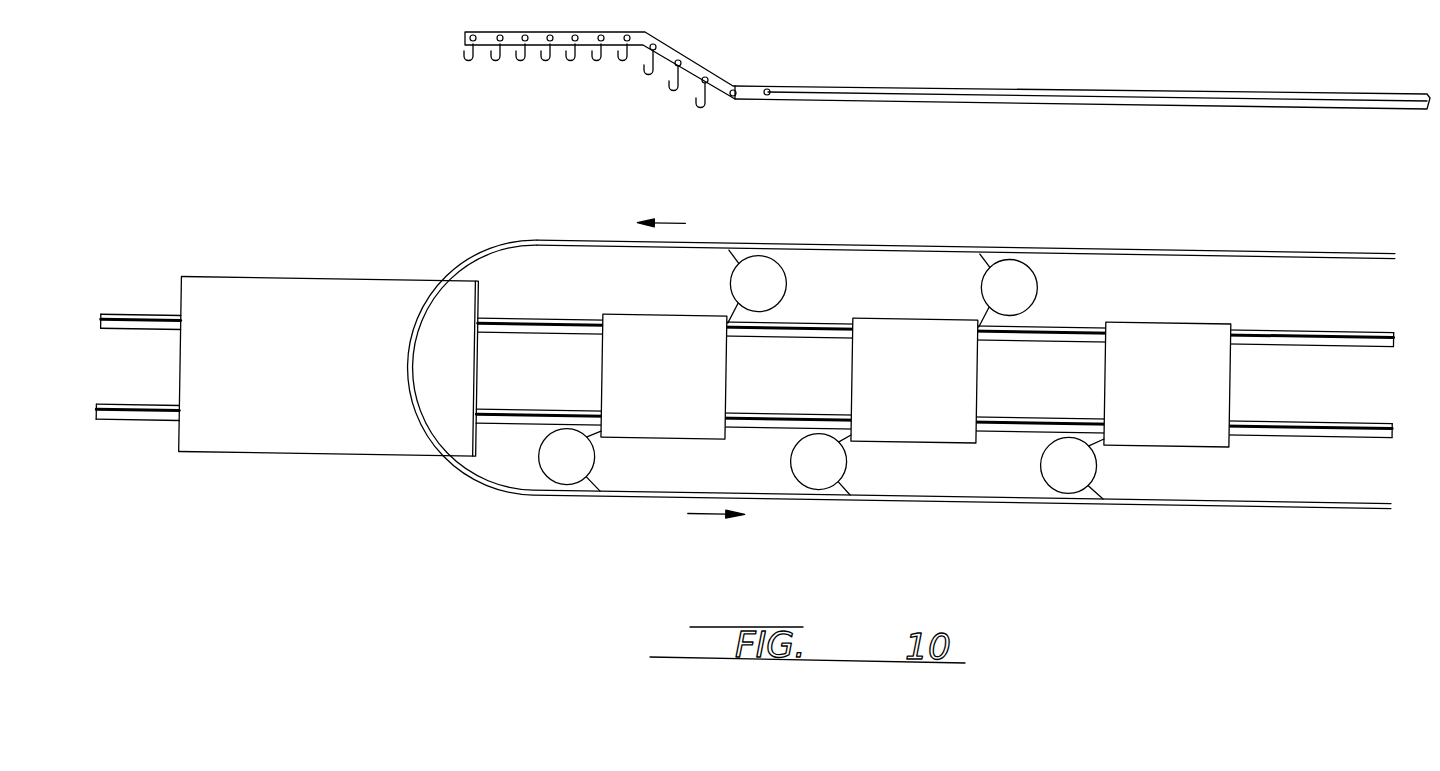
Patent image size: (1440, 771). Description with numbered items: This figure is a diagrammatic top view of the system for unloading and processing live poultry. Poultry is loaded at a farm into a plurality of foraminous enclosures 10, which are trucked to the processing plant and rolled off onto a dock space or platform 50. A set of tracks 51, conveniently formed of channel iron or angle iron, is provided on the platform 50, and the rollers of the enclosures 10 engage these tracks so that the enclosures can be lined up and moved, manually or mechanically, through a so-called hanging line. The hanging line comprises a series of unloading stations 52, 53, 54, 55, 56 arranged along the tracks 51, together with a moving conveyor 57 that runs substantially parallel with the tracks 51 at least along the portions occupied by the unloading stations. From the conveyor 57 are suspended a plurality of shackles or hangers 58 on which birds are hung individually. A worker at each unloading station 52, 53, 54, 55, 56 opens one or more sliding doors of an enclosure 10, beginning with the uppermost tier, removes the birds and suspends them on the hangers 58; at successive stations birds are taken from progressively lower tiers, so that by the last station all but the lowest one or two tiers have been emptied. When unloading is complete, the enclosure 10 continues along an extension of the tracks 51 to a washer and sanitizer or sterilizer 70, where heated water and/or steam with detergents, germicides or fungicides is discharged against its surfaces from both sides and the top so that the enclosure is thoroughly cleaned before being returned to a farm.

The foraminous enclosure 10 is at (667, 383).
The dock space or platform 50 is at (994, 489).
The tracks 51 is at (585, 331).
The unloading station 52 is at (1045, 461).
The unloading station 53 is at (1036, 282).
The unloading station 54 is at (805, 462).
The unloading station 55 is at (729, 280).
The unloading station 56 is at (562, 458).
The moving conveyor 57 is at (570, 246).
The shackles or hangers 58 is at (767, 100).
The washer and sanitizer or sterilizer 70 is at (329, 367).